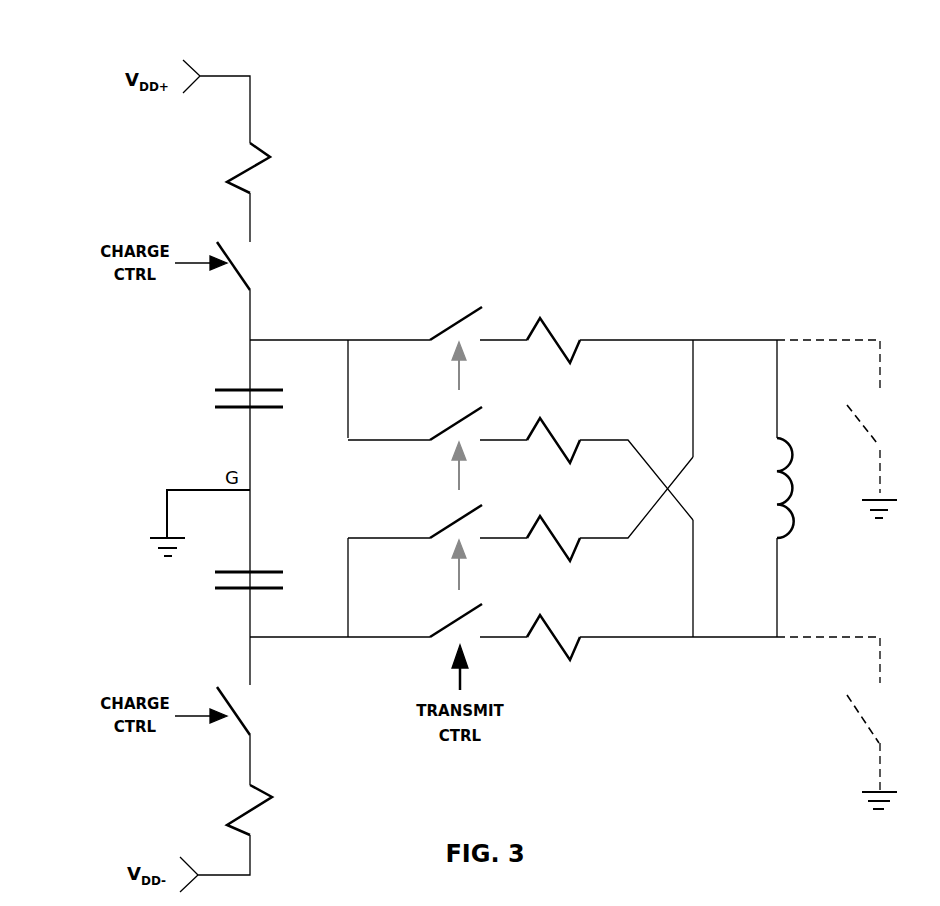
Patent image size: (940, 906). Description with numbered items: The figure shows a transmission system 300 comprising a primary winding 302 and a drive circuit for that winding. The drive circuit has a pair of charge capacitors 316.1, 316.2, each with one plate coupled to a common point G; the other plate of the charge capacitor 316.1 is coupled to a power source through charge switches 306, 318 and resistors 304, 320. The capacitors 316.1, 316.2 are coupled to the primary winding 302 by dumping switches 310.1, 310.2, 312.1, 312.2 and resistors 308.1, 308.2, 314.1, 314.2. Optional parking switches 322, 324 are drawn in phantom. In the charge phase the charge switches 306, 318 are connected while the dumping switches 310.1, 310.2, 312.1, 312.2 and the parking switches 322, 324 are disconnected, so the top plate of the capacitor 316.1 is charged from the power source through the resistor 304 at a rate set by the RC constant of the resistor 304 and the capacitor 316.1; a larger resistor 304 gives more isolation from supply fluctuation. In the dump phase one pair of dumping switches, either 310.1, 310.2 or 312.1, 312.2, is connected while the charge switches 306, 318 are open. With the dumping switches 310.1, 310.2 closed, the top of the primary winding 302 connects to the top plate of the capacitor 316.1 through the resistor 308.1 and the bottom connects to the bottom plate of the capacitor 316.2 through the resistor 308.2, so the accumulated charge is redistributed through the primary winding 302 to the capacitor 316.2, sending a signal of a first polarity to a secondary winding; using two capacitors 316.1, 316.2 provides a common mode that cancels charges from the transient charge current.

The transmission system 300 is at (878, 153).
The primary winding 302 is at (800, 467).
The resistor 304 is at (267, 167).
The charge switch 306 is at (250, 268).
The resistor 308.1 is at (558, 320).
The resistor 308.2 is at (553, 620).
The dumping switch 310.1 is at (450, 318).
The dumping switch 310.2 is at (448, 619).
The dumping switch 312.1 is at (450, 420).
The dumping switch 312.2 is at (448, 522).
The resistor 314.1 is at (555, 422).
The resistor 314.2 is at (553, 524).
The charge capacitor 316.1 is at (213, 398).
The charge capacitor 316.2 is at (210, 578).
The charge switch 318 is at (245, 710).
The resistor 320 is at (260, 823).
The parking switch 322 is at (872, 718).
The parking switch 324 is at (870, 427).